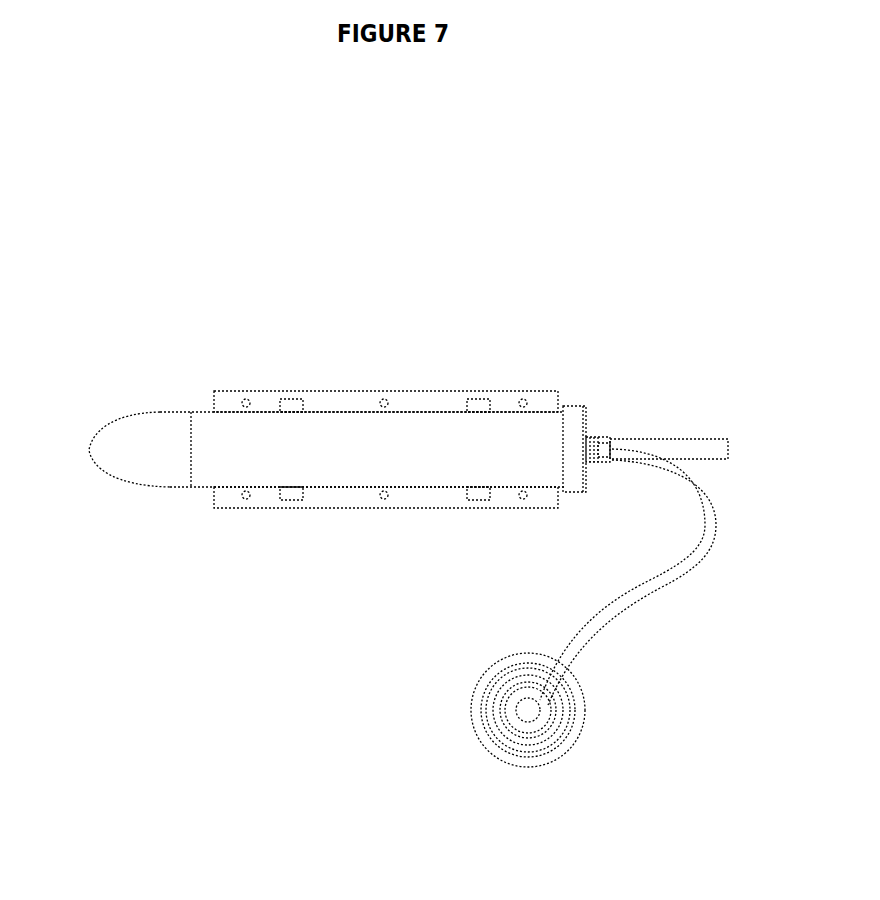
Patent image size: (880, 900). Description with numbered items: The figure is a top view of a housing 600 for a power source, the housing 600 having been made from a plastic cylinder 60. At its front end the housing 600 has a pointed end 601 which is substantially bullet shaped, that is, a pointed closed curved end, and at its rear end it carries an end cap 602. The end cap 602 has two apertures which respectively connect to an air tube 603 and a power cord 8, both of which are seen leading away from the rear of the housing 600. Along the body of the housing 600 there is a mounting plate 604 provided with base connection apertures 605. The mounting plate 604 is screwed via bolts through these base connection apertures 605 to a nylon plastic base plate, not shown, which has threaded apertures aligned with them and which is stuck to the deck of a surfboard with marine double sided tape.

The housing 600 is at (448, 379).
The plastic cylinder 60 is at (322, 455).
The pointed end 601 is at (145, 457).
The mounting plate 604 is at (435, 502).
The base connection apertures 605 is at (250, 496).
The end cap 602 is at (572, 423).
The power cord 8 is at (690, 450).
The air tube 603 is at (703, 548).